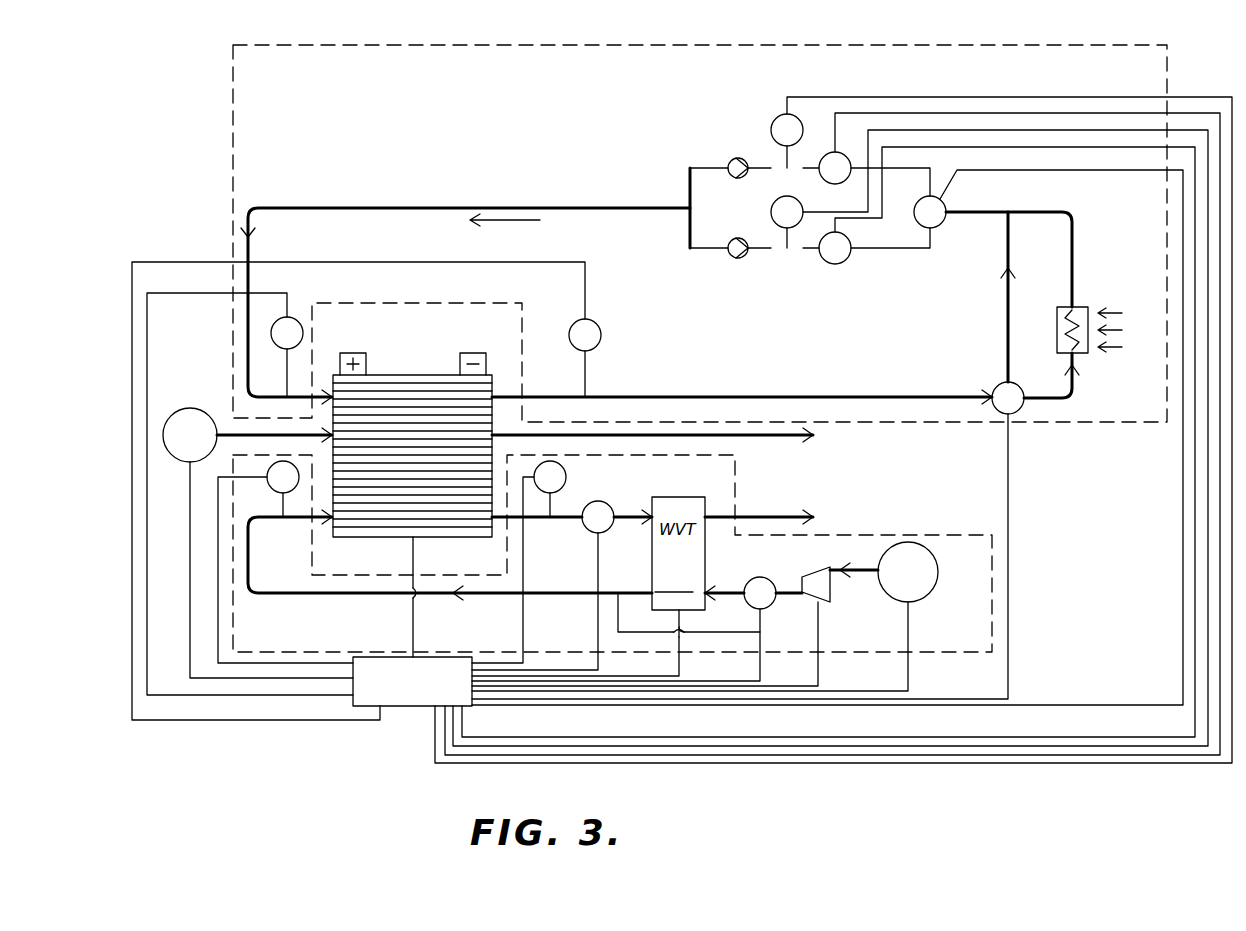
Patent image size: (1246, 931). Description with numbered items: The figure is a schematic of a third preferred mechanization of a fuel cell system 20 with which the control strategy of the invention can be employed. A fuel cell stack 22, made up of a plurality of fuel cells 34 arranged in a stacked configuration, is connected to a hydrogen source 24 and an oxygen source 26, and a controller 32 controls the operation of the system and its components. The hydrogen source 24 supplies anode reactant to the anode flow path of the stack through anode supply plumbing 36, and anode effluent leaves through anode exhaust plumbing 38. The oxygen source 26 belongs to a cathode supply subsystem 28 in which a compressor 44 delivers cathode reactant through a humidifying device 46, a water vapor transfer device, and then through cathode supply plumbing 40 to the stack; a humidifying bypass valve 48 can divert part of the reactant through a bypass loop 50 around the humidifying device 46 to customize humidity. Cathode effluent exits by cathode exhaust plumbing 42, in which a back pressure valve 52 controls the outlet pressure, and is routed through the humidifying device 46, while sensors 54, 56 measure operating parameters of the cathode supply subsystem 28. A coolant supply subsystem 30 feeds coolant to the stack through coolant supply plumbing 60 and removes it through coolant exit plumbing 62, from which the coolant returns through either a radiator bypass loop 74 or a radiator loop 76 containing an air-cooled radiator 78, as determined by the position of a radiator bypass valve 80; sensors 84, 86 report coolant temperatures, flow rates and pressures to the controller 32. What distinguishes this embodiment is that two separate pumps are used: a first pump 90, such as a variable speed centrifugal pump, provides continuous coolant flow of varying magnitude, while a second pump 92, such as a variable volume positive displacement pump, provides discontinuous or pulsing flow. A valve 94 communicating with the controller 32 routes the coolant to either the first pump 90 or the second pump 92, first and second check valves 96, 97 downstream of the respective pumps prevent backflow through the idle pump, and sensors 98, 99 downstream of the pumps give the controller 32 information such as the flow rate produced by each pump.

The fuel cell system 20 is at (203, 205).
The fuel cell stack 22 is at (397, 376).
The hydrogen source 24 is at (178, 456).
The oxygen source 26 is at (918, 598).
The cathode supply subsystem 28 is at (1012, 605).
The coolant supply subsystem 30 is at (566, 50).
The controller 32 is at (405, 706).
The fuel cells 34 is at (405, 492).
The anode supply plumbing 36 is at (212, 412).
The anode exhaust plumbing 38 is at (752, 440).
The cathode supply plumbing 40 is at (345, 598).
The cathode exhaust plumbing 42 is at (625, 510).
The compressor 44 is at (828, 600).
The humidifying device 46 is at (699, 584).
The humidifying bypass valve 48 is at (770, 605).
The bypass loop 50 is at (716, 635).
The back pressure valve 52 is at (590, 535).
The sensor 54 is at (290, 497).
The sensor 56 is at (566, 474).
The coolant supply plumbing 60 is at (352, 208).
The coolant exit plumbing 62 is at (755, 393).
The radiator bypass loop 74 is at (1008, 348).
The radiator loop 76 is at (1072, 270).
The air-cooled radiator 78 is at (1088, 353).
The radiator bypass valve 80 is at (1020, 410).
The sensor 84 is at (297, 318).
The sensor 86 is at (598, 328).
The first pump 90 is at (845, 150).
The second pump 92 is at (847, 260).
The valve 94 is at (940, 228).
The first check valve 96 is at (728, 160).
The second check valve 97 is at (730, 257).
The sensor 98 is at (775, 118).
The sensor 99 is at (793, 227).